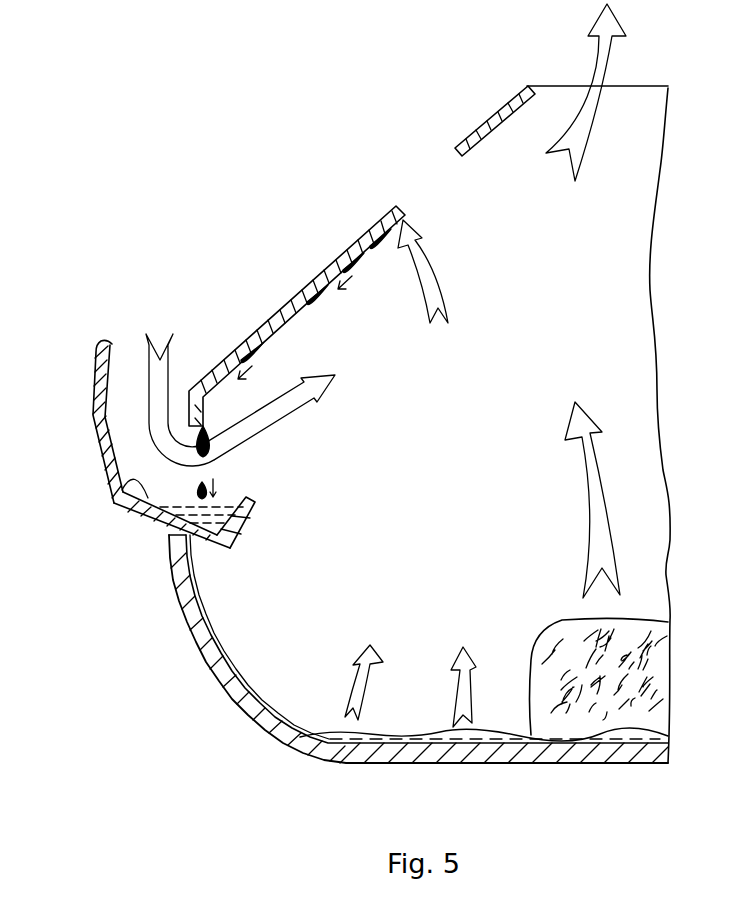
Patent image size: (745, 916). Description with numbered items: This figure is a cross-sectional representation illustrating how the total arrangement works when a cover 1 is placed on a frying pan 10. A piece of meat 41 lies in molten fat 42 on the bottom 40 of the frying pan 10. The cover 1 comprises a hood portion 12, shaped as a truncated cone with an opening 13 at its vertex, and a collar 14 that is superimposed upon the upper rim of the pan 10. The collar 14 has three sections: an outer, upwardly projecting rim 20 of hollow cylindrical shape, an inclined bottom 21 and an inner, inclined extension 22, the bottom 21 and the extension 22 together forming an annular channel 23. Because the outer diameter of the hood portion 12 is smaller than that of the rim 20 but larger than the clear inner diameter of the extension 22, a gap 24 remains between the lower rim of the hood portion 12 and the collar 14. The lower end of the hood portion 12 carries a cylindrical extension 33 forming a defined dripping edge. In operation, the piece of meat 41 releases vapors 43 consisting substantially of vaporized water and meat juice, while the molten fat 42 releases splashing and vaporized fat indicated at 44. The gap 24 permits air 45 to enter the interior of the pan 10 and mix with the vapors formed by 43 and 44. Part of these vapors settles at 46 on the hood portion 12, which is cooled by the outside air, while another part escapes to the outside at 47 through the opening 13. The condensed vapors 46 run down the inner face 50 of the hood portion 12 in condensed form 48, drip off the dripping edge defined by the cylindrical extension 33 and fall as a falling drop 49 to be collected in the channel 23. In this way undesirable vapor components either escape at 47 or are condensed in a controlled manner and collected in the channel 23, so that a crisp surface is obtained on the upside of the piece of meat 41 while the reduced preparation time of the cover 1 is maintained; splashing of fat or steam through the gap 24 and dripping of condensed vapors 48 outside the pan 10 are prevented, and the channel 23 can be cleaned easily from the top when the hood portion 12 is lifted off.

The cover 1 is at (243, 155).
The frying pan 10 is at (263, 748).
The hood portion 12 is at (362, 242).
The opening 13 is at (573, 88).
The collar 14 is at (80, 386).
The rim 20 is at (100, 444).
The bottom 21 is at (157, 494).
The extension 22 is at (253, 515).
The annular channel 23 is at (115, 484).
The gap 24 is at (136, 445).
The cylindrical extension 33 is at (203, 413).
The bottom 40 is at (538, 765).
The piece of meat 41 is at (552, 642).
The molten fat 42 is at (417, 733).
The vapors 43 is at (600, 513).
The splashing and vaporized fat 44 is at (358, 692).
The air 45 is at (267, 428).
The condensed vapors 46 is at (436, 283).
The escaping vapors 47 is at (587, 123).
The condensed vapors 48 is at (360, 267).
The falling droplet 49 is at (198, 490).
The inner face 50 is at (292, 330).